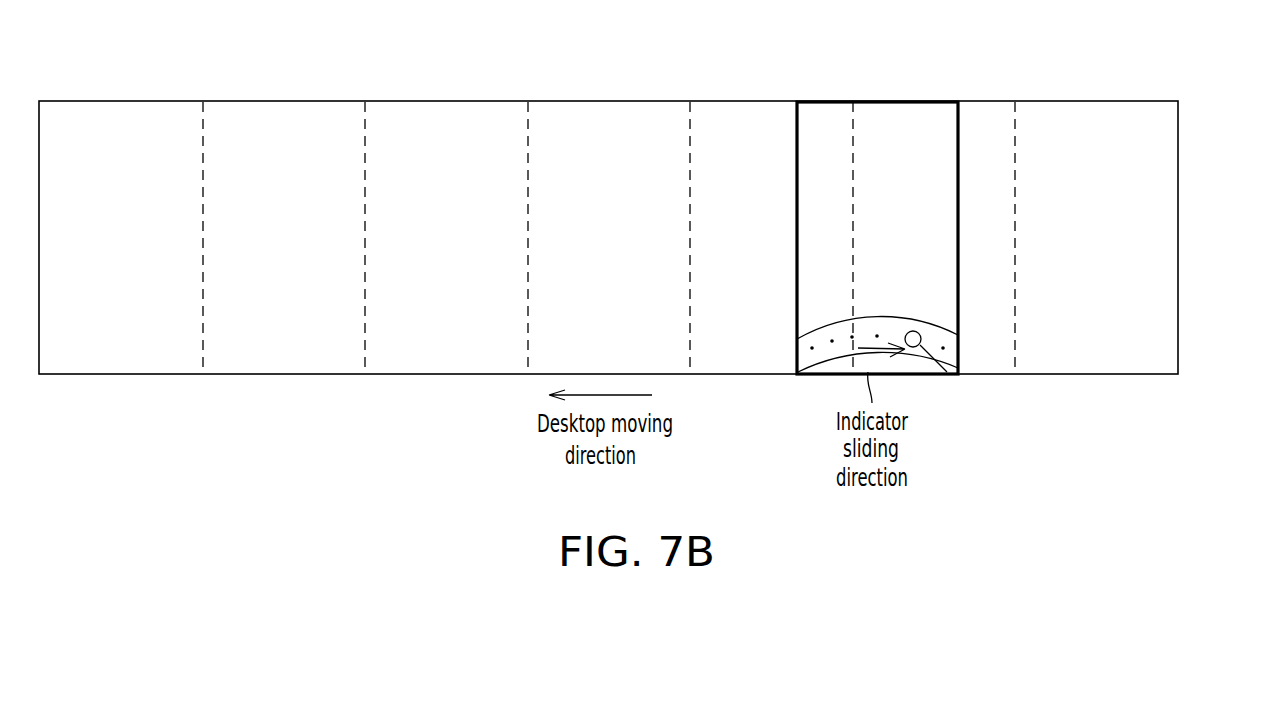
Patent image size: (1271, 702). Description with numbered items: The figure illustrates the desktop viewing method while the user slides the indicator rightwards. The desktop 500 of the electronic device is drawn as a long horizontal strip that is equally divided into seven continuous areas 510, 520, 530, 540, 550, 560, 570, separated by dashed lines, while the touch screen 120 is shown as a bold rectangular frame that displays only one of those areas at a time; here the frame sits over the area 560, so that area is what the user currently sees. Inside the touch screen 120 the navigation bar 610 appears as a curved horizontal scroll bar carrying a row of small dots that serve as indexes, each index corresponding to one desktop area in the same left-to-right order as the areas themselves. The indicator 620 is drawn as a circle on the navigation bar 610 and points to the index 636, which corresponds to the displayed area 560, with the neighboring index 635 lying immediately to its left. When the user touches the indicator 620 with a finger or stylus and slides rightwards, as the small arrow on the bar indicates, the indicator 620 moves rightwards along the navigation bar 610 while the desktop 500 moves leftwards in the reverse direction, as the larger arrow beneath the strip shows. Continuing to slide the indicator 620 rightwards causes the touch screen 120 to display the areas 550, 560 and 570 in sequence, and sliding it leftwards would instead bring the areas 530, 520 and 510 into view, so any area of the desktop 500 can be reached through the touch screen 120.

The desktop 500 is at (1178, 346).
The area 510 is at (103, 120).
The area 520 is at (277, 122).
The area 530 is at (443, 125).
The area 540 is at (605, 125).
The area 550 is at (747, 126).
The area 560 is at (910, 126).
The area 570 is at (1116, 127).
The touch screen 120 is at (960, 136).
The navigation bar 610 is at (835, 372).
The indicator 620 is at (912, 331).
The index 635 is at (900, 338).
The index 636 is at (947, 372).